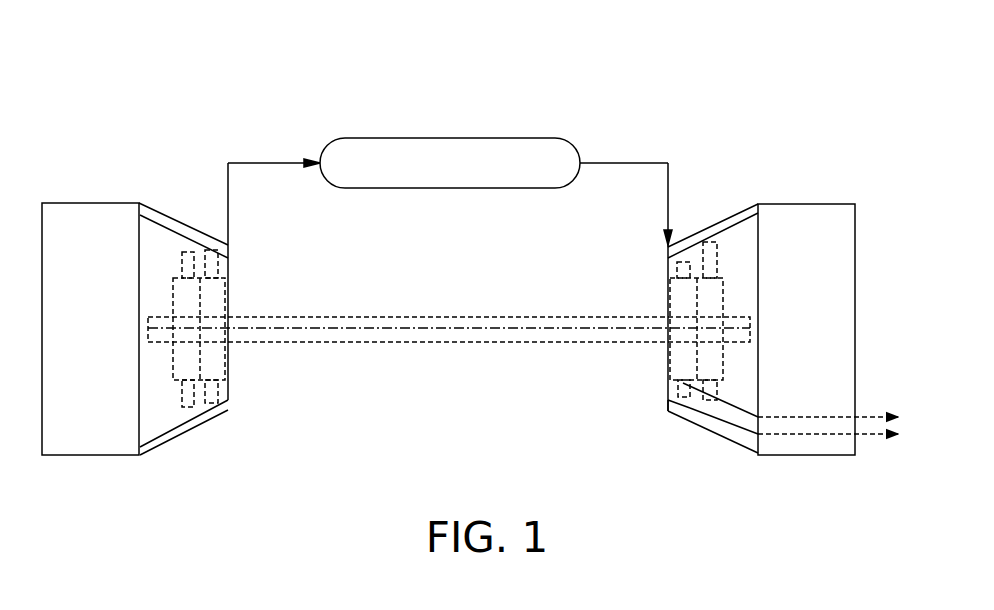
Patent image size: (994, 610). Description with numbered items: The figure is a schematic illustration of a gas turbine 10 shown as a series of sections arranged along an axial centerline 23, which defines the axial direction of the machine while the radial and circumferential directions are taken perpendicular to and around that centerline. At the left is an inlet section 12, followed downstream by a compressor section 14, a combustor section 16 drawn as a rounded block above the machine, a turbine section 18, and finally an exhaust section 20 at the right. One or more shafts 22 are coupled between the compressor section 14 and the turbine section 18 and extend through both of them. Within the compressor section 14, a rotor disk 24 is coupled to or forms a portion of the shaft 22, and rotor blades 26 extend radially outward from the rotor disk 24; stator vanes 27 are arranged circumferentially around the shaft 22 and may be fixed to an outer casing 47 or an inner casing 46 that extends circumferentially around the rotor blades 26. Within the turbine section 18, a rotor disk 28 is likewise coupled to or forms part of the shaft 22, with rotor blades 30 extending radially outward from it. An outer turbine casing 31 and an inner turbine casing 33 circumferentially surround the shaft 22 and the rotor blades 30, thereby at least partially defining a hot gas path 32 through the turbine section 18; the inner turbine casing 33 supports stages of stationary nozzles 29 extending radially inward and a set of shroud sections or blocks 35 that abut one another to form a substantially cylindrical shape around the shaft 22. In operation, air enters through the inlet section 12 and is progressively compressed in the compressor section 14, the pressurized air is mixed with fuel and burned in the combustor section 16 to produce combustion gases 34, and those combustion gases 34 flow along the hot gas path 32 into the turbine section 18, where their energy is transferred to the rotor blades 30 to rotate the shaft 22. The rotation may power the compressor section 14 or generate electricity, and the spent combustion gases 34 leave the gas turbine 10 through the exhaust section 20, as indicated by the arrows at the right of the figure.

The gas turbine 10 is at (268, 90).
The inlet section 12 is at (73, 203).
The compressor section 14 is at (175, 224).
The combustor section 16 is at (518, 138).
The turbine section 18 is at (740, 212).
The exhaust section 20 is at (818, 203).
The shaft 22 is at (385, 343).
The axial centerline 23 is at (480, 343).
The rotor disk 24 is at (173, 292).
The rotor blades 26 is at (182, 262).
The stator vanes 27 is at (218, 270).
The rotor disk 28 is at (695, 300).
The stationary nozzles 29 is at (717, 258).
The rotor blades 30 is at (680, 258).
The outer turbine casing 31 is at (748, 453).
The hot gas path 32 is at (725, 387).
The inner turbine casing 33 is at (677, 412).
The combustion gases 34 is at (635, 163).
The shroud sections or blocks 35 is at (712, 425).
The inner casing 46 is at (162, 447).
The outer casing 47 is at (147, 211).